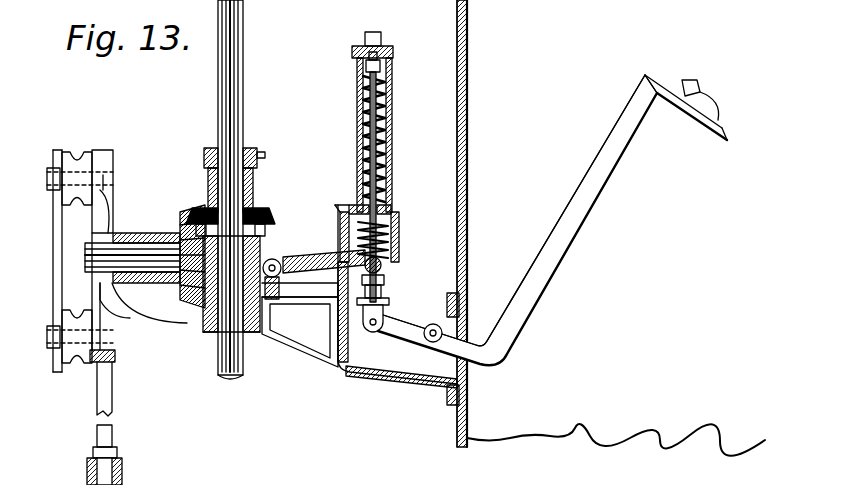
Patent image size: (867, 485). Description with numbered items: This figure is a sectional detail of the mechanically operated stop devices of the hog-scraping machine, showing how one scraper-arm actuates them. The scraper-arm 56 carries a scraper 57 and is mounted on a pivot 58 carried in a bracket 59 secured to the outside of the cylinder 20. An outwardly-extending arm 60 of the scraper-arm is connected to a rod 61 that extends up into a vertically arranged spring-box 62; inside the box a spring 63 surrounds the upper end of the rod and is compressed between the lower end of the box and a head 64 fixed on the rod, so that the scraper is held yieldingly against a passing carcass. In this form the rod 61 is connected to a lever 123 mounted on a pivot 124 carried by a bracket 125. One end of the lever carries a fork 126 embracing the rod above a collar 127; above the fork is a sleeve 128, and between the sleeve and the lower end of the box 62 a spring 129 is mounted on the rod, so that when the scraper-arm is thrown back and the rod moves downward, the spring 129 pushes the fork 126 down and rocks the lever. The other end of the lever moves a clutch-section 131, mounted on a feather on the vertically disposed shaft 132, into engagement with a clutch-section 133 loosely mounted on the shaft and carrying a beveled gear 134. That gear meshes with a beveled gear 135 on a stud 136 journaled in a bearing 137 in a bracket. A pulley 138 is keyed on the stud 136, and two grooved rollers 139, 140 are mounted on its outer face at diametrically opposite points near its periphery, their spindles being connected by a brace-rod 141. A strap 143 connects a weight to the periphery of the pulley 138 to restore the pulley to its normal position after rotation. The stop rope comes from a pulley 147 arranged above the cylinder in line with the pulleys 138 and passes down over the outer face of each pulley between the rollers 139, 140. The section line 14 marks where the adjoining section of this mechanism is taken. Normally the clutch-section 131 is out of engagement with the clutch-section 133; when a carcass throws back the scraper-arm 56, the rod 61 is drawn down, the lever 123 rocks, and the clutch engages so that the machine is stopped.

The section line 14 is at (182, 215).
The cylinder 20 is at (466, 120).
The scraper-arm 56 is at (551, 258).
The scraper 57 is at (726, 132).
The pivot 58 is at (433, 330).
The bracket 59 is at (380, 328).
The outwardly-extending arm 60 is at (517, 220).
The rod 61 is at (384, 287).
The spring-box 62 is at (386, 103).
The spring 63 is at (387, 148).
The head 64 is at (380, 66).
The lever 123 is at (324, 263).
The pivot 124 is at (273, 259).
The bracket 125 is at (300, 332).
The fork 126 is at (382, 266).
The collar 127 is at (359, 296).
The sleeve 128 is at (389, 245).
The spring 129 is at (393, 212).
The clutch-section 131 is at (261, 240).
The shaft 132 is at (243, 90).
The clutch-section 133 is at (257, 176).
The beveled gear 134 is at (268, 210).
The beveled gear 135 is at (187, 300).
The stud 136 is at (132, 258).
The bearing 137 is at (154, 295).
The pulley 138 is at (112, 208).
The grooved roller 139 is at (81, 365).
The grooved roller 140 is at (77, 152).
The brace-rod 141 is at (53, 259).
The strap 143 is at (111, 401).
The pulley 147 is at (121, 471).